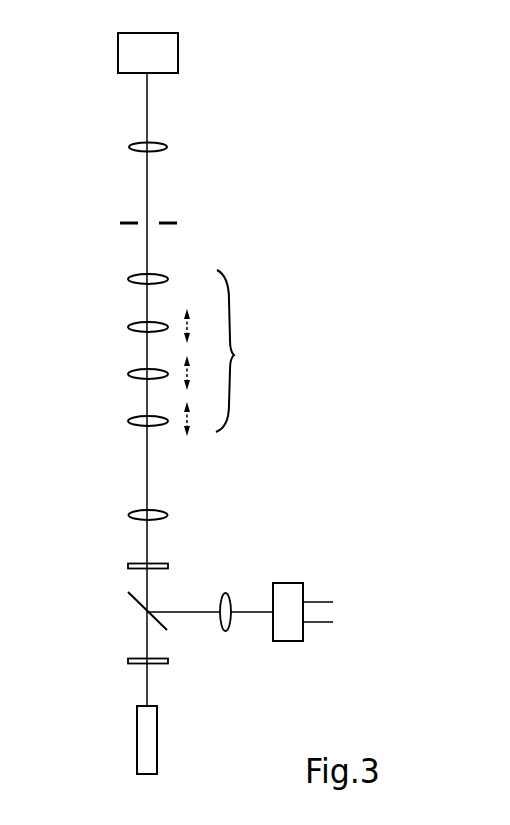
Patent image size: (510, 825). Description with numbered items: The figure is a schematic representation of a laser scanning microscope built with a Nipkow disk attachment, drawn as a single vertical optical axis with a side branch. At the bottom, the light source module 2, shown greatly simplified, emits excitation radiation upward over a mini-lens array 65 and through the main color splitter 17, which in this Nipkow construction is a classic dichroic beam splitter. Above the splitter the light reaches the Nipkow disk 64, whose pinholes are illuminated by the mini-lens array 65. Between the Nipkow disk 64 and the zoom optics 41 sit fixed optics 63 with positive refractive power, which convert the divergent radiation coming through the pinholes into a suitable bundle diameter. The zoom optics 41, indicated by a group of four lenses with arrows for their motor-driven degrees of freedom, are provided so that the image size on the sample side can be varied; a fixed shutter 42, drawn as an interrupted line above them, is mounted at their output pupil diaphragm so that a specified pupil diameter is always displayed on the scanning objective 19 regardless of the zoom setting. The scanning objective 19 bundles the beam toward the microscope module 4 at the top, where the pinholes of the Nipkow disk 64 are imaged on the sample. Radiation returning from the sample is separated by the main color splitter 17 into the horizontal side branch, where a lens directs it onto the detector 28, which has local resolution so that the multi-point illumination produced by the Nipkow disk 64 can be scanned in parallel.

The light source module 2 is at (175, 728).
The microscope module 4 is at (127, 53).
The main color splitter 17 is at (138, 606).
The scanning objective 19 is at (137, 146).
The detector 28 is at (290, 580).
The zoom optics 41 is at (205, 353).
The shutter 42 is at (118, 227).
The fixed optics 63 is at (128, 513).
The Nipkow disk 64 is at (128, 566).
The mini-lens array 65 is at (132, 667).